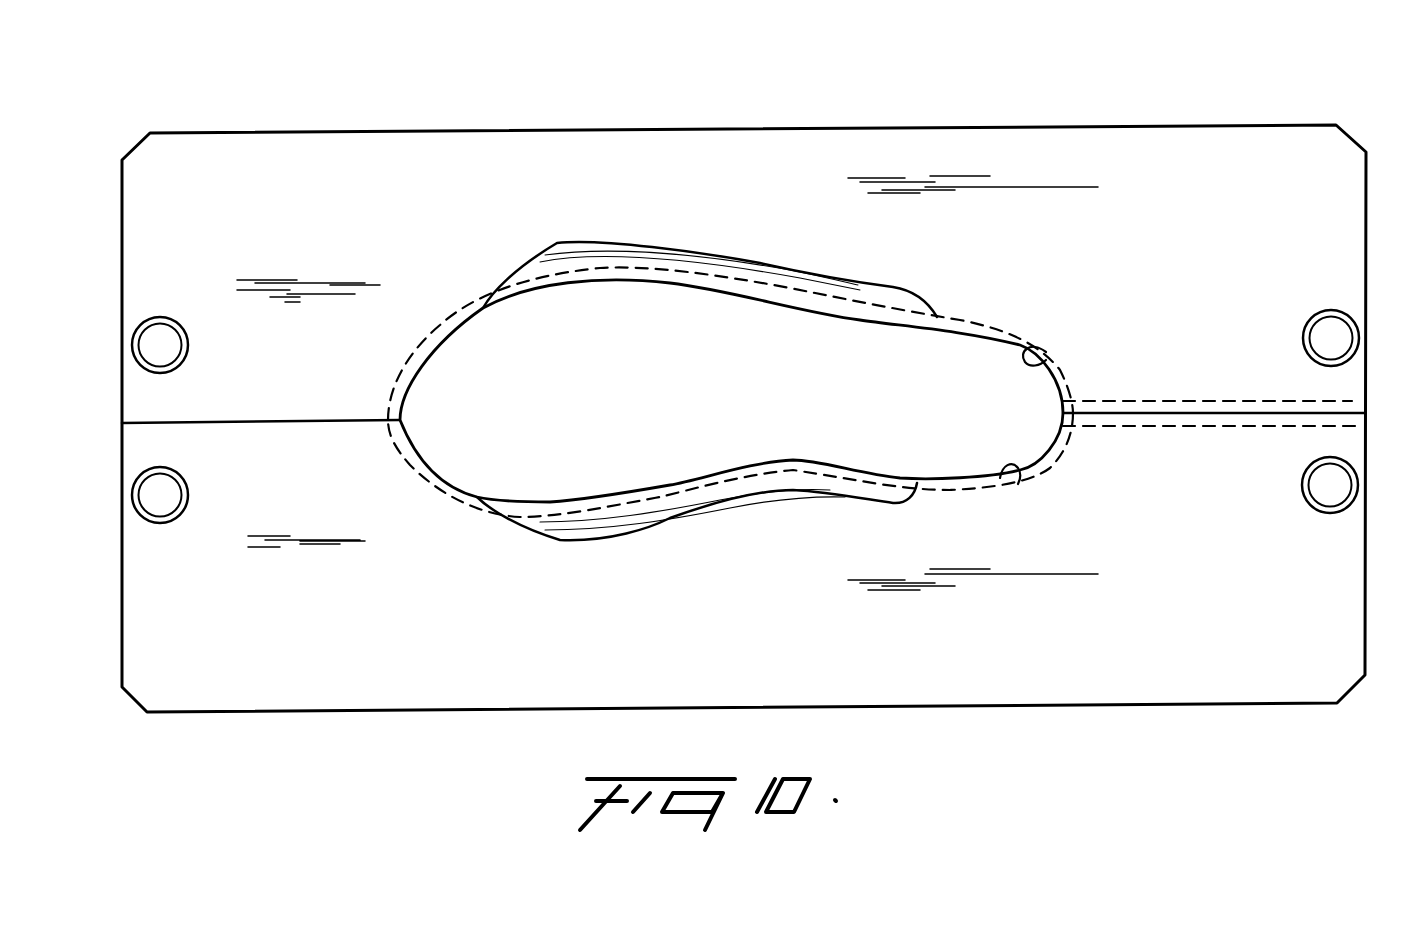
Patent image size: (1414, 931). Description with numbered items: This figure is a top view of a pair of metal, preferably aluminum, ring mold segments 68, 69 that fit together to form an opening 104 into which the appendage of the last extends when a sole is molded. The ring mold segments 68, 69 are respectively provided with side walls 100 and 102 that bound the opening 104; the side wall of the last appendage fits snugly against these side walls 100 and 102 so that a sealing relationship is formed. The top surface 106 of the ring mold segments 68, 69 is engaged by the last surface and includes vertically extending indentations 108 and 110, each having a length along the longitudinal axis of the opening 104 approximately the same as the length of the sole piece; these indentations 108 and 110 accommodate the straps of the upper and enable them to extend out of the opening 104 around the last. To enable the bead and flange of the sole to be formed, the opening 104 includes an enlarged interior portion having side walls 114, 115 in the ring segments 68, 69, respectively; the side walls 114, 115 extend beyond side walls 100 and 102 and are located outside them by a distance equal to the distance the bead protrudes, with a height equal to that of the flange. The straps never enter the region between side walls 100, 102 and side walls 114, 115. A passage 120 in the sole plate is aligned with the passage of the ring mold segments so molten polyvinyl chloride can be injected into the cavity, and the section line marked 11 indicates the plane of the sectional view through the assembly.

The ring mold segment 68 is at (996, 148).
The ring mold segment 69 is at (1115, 673).
The side wall 100 is at (1045, 360).
The side wall 102 is at (1018, 472).
The opening 104 is at (785, 395).
The top surface 106 is at (1222, 143).
The indentation 108 is at (800, 287).
The indentation 110 is at (808, 483).
The side wall 114 is at (992, 325).
The side wall 115 is at (975, 488).
The passage 120 is at (1352, 405).
The section line 11- 11 is at (88, 430).